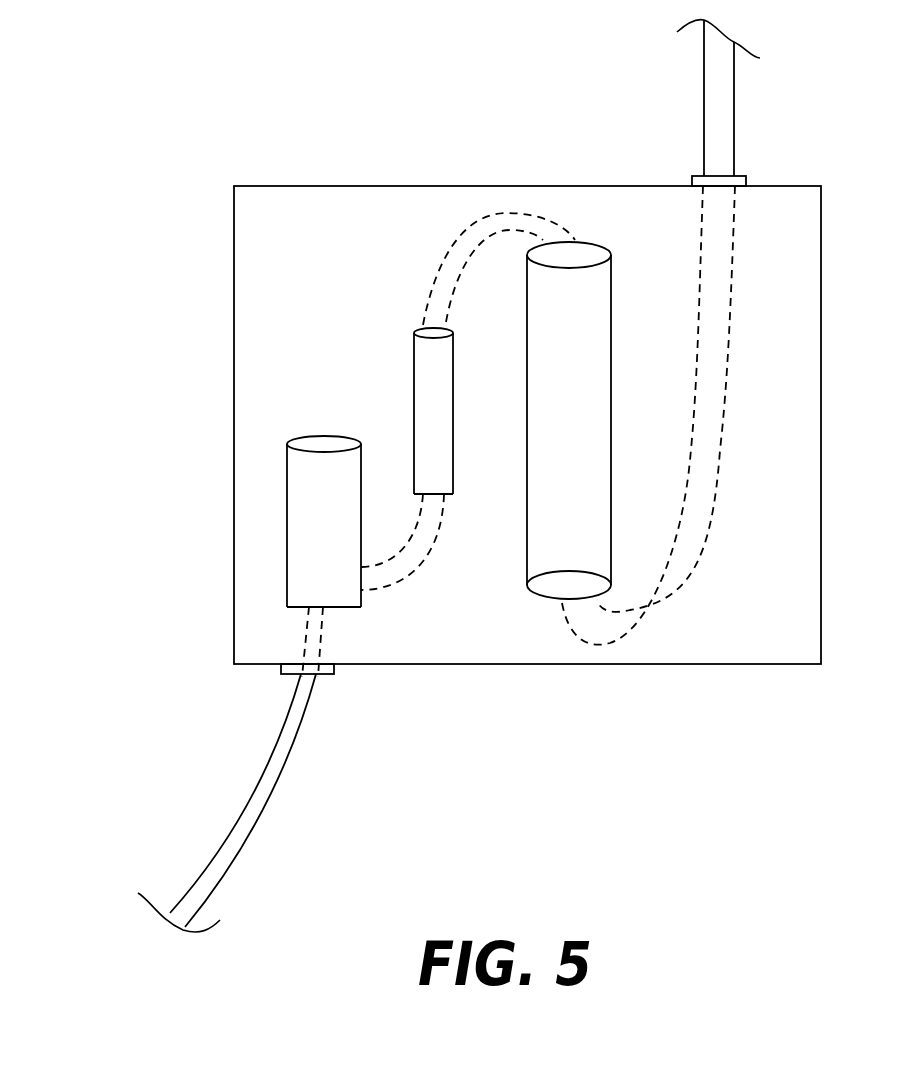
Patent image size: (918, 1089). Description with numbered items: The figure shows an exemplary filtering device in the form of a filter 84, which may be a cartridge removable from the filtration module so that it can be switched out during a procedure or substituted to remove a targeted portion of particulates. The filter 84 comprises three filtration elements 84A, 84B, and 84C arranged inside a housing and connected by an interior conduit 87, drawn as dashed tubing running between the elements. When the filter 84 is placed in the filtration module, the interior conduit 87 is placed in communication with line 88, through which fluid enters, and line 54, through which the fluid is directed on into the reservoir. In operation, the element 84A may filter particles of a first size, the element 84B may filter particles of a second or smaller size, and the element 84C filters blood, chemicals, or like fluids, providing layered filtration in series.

The filter 84 is at (165, 117).
The line 54 is at (704, 90).
The interior conduit 87 is at (453, 240).
The filtration element 84A is at (298, 540).
The filtration element 84B is at (448, 448).
The filtration element 84C is at (568, 405).
The line 88 is at (240, 800).